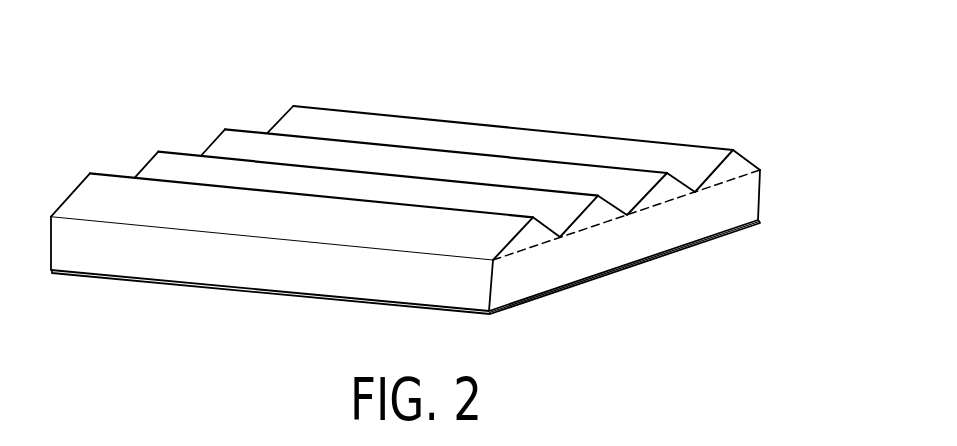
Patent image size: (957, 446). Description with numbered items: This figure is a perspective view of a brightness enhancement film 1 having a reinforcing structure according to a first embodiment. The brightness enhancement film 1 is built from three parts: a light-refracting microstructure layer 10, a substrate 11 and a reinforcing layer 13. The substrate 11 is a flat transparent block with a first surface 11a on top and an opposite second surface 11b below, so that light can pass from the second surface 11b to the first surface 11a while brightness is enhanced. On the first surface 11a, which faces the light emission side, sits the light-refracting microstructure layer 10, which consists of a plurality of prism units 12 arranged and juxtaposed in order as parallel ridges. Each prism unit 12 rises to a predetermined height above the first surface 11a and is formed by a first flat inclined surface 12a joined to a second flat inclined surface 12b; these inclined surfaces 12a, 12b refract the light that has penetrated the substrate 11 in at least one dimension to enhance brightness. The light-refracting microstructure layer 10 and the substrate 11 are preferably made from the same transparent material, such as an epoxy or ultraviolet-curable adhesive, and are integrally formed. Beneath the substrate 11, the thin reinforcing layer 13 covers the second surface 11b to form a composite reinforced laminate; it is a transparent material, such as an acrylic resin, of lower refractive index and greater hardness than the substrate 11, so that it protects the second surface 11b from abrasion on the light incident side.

The brightness enhancement film 1 is at (218, 297).
The light-refracting microstructure layer 10 is at (473, 125).
The substrate 11 is at (747, 200).
The first surface 11a is at (657, 205).
The second surface 11b is at (758, 222).
The prism units 12 is at (824, 128).
The first flat inclined surface 12a is at (702, 158).
The second flat inclined surface 12b is at (737, 150).
The reinforcing layer 13 is at (708, 243).